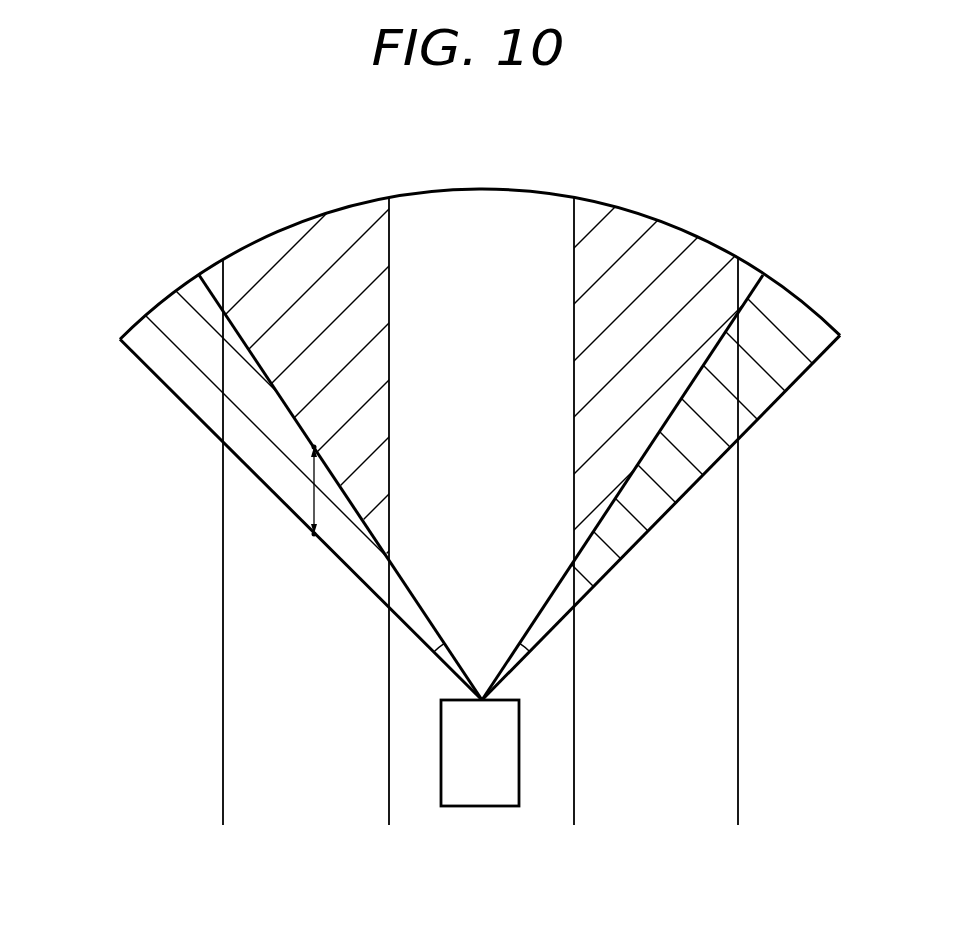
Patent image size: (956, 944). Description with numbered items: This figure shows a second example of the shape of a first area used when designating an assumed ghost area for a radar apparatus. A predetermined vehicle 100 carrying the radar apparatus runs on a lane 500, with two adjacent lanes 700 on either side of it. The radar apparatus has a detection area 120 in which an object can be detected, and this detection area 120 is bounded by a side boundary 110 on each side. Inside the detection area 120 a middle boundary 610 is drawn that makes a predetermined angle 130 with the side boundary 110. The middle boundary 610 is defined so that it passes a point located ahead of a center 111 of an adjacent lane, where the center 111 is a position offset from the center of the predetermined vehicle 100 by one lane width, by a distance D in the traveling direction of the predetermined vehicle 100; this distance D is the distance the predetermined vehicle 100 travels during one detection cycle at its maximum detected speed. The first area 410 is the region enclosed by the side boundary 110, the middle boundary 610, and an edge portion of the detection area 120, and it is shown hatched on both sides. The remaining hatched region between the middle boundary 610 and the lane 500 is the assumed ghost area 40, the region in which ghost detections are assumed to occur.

The predetermined vehicle 100 is at (502, 807).
The side boundary 110 is at (358, 578).
The center of adjacent lane 111 is at (314, 537).
The detection area 120 is at (483, 190).
The predetermined angle 130 is at (432, 647).
The assumed ghost area 40 is at (390, 284).
The first area 410 is at (247, 405).
The lane 500 is at (418, 812).
The middle boundary 610 is at (267, 372).
The adjacent lanes 700 is at (303, 792).